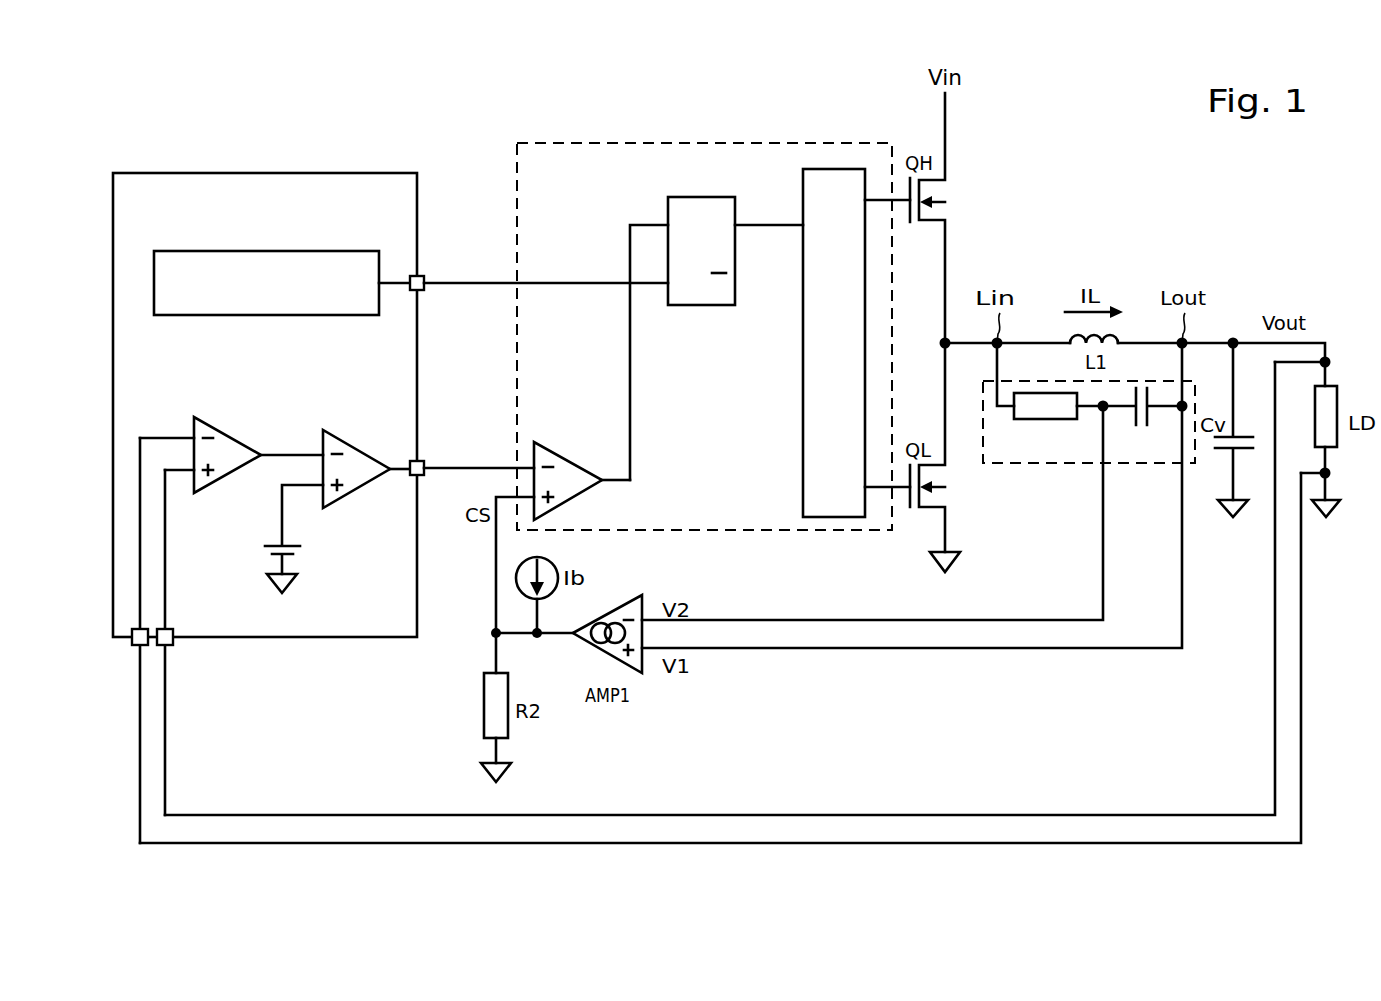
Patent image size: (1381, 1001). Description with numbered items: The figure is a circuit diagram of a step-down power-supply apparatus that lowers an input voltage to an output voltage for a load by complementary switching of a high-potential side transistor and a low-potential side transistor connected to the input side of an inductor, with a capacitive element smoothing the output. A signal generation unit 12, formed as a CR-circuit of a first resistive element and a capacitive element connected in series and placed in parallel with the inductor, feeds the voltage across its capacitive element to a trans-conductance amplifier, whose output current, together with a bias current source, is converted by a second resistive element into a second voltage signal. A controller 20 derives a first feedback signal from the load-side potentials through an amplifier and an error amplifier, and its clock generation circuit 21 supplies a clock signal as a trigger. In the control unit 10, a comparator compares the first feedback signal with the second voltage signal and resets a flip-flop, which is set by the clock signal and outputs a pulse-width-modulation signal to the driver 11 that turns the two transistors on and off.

The control unit 10 is at (748, 143).
The driver 11 is at (803, 422).
The signal generation unit 12 is at (1042, 465).
The controller 20 is at (367, 173).
The clock generation circuit 21 is at (303, 248).